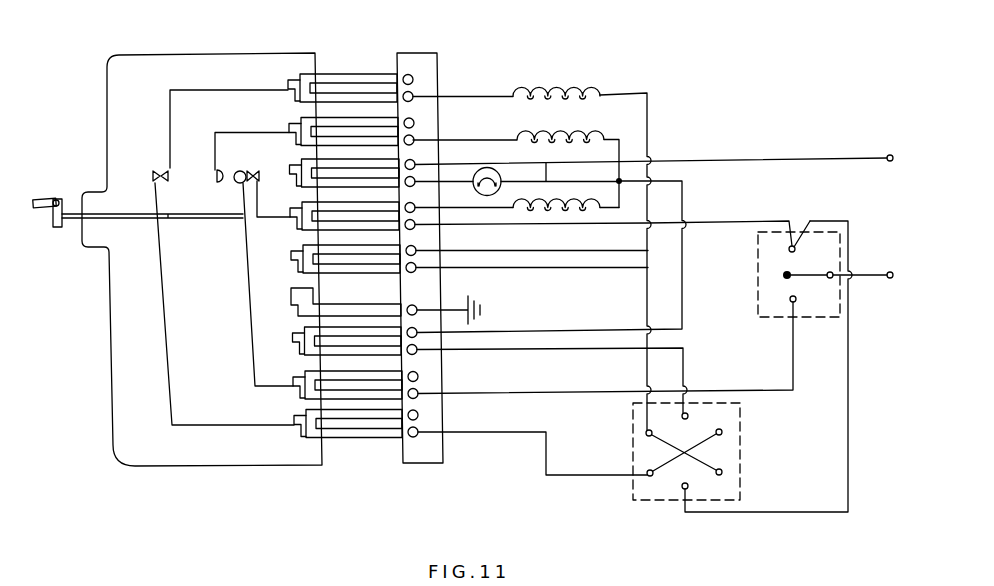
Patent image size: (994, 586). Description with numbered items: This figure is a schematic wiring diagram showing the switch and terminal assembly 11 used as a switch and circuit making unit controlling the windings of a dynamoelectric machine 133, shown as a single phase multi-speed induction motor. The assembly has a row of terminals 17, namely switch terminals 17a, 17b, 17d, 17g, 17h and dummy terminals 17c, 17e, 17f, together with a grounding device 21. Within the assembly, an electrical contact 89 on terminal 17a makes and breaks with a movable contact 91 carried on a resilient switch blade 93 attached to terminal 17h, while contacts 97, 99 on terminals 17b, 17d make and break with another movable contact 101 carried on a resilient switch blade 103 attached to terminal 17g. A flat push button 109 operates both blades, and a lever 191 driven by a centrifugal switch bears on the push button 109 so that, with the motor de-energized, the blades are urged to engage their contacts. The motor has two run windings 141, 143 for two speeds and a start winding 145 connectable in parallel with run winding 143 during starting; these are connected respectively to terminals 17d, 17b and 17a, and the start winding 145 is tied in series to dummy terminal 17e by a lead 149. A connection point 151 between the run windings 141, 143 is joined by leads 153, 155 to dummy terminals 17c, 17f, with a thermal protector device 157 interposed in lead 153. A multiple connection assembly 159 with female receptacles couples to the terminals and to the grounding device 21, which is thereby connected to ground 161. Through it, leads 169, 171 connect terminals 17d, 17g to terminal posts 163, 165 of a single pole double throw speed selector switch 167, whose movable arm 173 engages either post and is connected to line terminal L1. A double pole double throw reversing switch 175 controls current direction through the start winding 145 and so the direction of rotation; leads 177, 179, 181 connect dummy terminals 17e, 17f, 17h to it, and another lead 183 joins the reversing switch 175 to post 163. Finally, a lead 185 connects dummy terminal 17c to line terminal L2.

The switch and terminal assembly 11 is at (181, 50).
The terminals 17 is at (350, 50).
The switch terminal 17a is at (292, 80).
The switch terminal 17b is at (293, 123).
The dummy terminal 17c is at (294, 165).
The switch terminal 17d is at (296, 208).
The dummy terminal 17e is at (295, 251).
The dummy terminal 17f is at (296, 333).
The switch terminal 17g is at (298, 377).
The switch terminal 17h is at (296, 416).
The grounding device 21 is at (294, 289).
The electrical contact 89 is at (168, 175).
The movable contact 91 is at (154, 175).
The resilient switch blade 93 is at (167, 357).
The electrical contact 97 is at (215, 171).
The electrical contact 99 is at (253, 170).
The movable contact 101 is at (238, 183).
The resilient switch blade 103 is at (250, 343).
The push button 109 is at (60, 202).
The dynamoelectric machine 133 is at (547, 50).
The run winding 141 is at (528, 216).
The run winding 143 is at (529, 131).
The start winding 145 is at (583, 86).
The lead 149 is at (648, 106).
The connection point 151 is at (622, 179).
The lead 153 is at (546, 163).
The lead 155 is at (682, 199).
The thermal protector device 157 is at (477, 190).
The multiple connection assembly 159 is at (414, 470).
The ground 161 is at (486, 303).
The terminal post 163 is at (794, 245).
The terminal post 165 is at (790, 299).
The speed selector switch 167 is at (758, 250).
The lead 169 is at (745, 221).
The lead 171 is at (789, 391).
The movable arm 173 is at (810, 278).
The reversing switch 175 is at (650, 503).
The lead 177 is at (626, 267).
The lead 179 is at (572, 348).
The lead 181 is at (575, 478).
The lead 183 is at (849, 448).
The lead 185 is at (758, 160).
The lever 191 is at (43, 213).
The line terminal L1 is at (889, 272).
The line terminal L2 is at (889, 155).